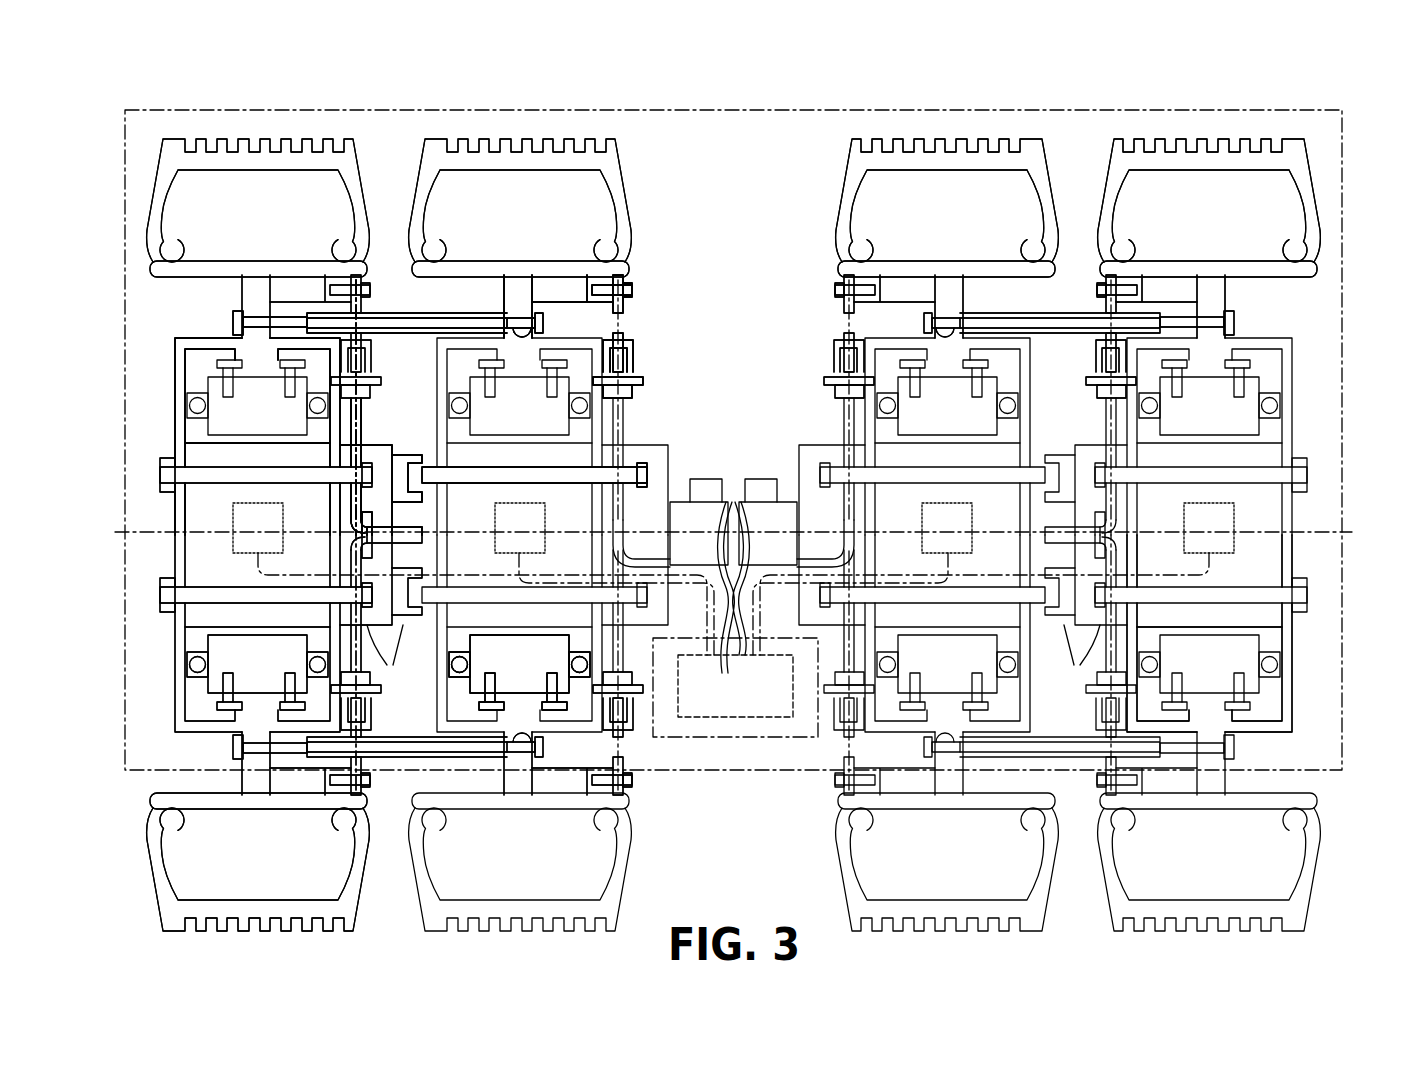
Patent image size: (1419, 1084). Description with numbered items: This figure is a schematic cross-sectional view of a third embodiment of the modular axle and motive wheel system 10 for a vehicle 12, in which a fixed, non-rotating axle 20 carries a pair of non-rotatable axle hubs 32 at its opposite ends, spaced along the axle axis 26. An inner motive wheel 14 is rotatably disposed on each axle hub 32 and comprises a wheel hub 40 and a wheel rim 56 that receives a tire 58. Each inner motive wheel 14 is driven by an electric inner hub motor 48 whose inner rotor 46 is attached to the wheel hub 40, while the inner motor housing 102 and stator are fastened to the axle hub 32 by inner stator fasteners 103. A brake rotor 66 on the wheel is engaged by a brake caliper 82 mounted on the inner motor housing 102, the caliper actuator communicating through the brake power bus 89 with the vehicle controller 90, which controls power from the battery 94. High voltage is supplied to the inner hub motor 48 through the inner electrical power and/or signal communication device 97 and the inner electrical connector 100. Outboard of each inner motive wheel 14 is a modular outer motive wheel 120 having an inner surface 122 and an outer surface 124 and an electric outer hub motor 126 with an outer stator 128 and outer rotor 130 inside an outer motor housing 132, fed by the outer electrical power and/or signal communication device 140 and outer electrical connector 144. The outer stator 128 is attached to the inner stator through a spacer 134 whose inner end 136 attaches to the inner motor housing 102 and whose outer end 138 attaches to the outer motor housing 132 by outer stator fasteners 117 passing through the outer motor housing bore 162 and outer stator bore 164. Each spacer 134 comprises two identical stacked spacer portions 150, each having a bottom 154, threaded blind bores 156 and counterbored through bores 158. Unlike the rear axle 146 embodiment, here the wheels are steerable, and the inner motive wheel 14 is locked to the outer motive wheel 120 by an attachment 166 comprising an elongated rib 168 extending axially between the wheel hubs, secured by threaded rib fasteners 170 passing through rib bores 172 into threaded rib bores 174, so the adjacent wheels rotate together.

The modular axle and motive wheel system 10 is at (705, 235).
The vehicle 12 is at (740, 100).
The inner motive wheel 14 is at (625, 133).
The axle 20 is at (795, 490).
The axle axis 26 is at (1345, 532).
The axle hub 32 is at (660, 442).
The wheel hub 40 is at (545, 288).
The inner rotor 46 is at (628, 305).
The electric inner hub motor 48 is at (610, 670).
The wheel rim 56 is at (195, 258).
The tire 58 is at (630, 163).
The brake rotor 66 is at (833, 305).
The brake caliper 82 is at (640, 357).
The brake power bus 89 is at (390, 332).
The vehicle controller 90 is at (735, 722).
The battery 94 is at (665, 740).
The inner electrical power and/or signal communication device 97 is at (690, 585).
The inner electrical connector 100 is at (547, 527).
The inner motor housing 102 is at (552, 742).
The inner stator fastener 103 is at (437, 485).
The outer stator fastener 117 is at (210, 466).
The outer motive wheel 120 is at (362, 150).
The inner surface 122 is at (290, 775).
The outer surface 124 is at (245, 793).
The electric outer hub motor 126 is at (175, 708).
The outer stator 128 is at (177, 672).
The outer rotor 130 is at (322, 338).
The outer motor housing 132 is at (170, 565).
The spacer 134 is at (458, 340).
The inner end 136 is at (452, 500).
The outer end 138 is at (345, 485).
The outer electrical power and/or signal communication device 140 is at (252, 570).
The outer electrical connector 144 is at (225, 510).
The rear axle 146 is at (735, 686).
The spacer portion 150 is at (717, 662).
The bottom 154 is at (394, 455).
The threaded blind bore 156 is at (338, 565).
The counterbored through bore 158 is at (374, 540).
The outer motor housing bore 162 is at (175, 605).
The outer stator bore 164 is at (296, 595).
The attachment 166 is at (378, 308).
The elongated rib 168 is at (435, 318).
The threaded rib fastener 170 is at (498, 740).
The rib bore 172 is at (262, 328).
The threaded rib bore 174 is at (267, 742).